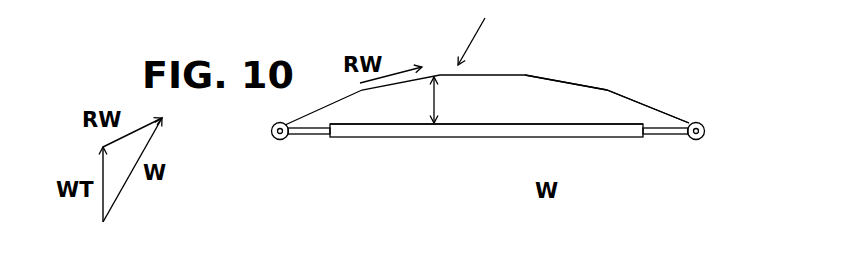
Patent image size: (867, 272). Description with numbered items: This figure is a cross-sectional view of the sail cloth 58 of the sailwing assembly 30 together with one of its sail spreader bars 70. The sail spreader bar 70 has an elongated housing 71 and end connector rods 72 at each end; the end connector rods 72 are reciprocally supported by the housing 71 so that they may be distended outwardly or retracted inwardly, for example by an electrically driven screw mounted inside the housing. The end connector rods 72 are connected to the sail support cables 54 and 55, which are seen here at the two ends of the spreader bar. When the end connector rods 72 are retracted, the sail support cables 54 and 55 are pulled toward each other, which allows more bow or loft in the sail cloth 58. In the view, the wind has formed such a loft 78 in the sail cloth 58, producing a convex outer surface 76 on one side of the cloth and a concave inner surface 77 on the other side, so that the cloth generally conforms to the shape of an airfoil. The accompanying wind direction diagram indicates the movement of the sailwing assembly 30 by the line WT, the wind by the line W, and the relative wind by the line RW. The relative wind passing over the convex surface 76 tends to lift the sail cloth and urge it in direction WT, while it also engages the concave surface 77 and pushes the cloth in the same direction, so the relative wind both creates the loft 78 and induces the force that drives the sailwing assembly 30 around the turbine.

The sailwing assembly 30 is at (660, 90).
The sail support cable 54 is at (702, 137).
The sail support cable 55 is at (274, 139).
The sail cloth 58 is at (675, 115).
The sail spreader bar 70 is at (405, 137).
The elongated housing 71 is at (477, 131).
The end connector rods 72 is at (309, 134).
The convex outer surface 76 is at (575, 83).
The concave inner surface 77 is at (568, 86).
The loft 78 is at (436, 100).